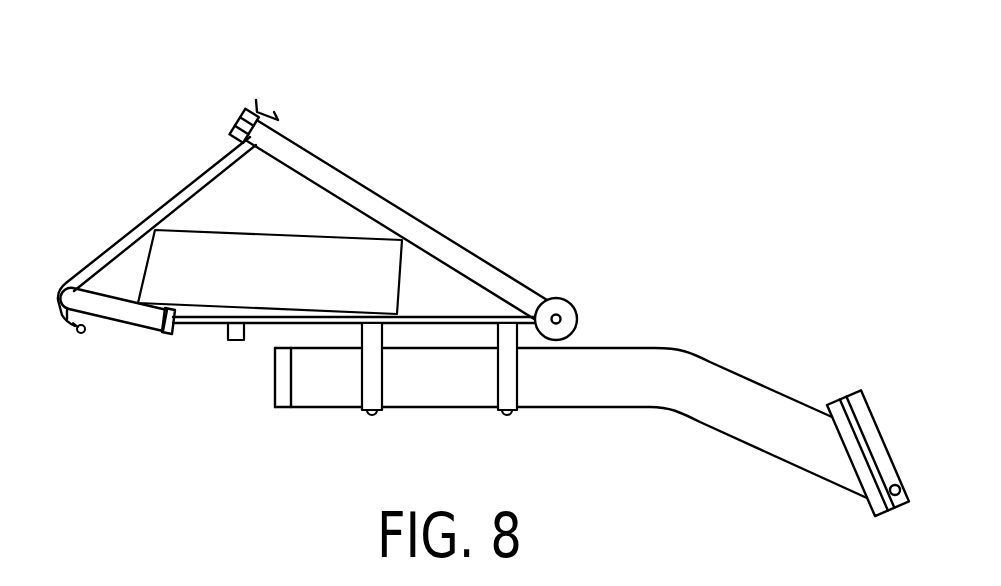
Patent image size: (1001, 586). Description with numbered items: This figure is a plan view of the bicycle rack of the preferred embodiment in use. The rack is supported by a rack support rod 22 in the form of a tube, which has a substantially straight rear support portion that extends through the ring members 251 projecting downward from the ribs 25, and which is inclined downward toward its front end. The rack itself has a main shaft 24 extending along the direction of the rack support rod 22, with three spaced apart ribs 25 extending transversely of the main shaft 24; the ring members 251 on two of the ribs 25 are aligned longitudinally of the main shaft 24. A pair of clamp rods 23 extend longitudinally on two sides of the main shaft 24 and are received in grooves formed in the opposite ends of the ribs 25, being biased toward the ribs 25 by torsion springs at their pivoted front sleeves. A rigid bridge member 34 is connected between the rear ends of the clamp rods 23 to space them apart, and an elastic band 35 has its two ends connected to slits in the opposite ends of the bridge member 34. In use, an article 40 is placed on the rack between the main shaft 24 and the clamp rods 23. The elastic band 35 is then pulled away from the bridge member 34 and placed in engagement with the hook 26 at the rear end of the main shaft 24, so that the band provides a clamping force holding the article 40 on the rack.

The rack support rod 22 is at (727, 378).
The clamp rod 23 is at (395, 217).
The main shaft 24 is at (197, 323).
The rib 25 is at (230, 341).
The ring member 251 is at (372, 373).
The hook 26 is at (75, 335).
The bridge member 34 is at (257, 100).
The elastic band 35 is at (125, 240).
The article 40 is at (292, 226).